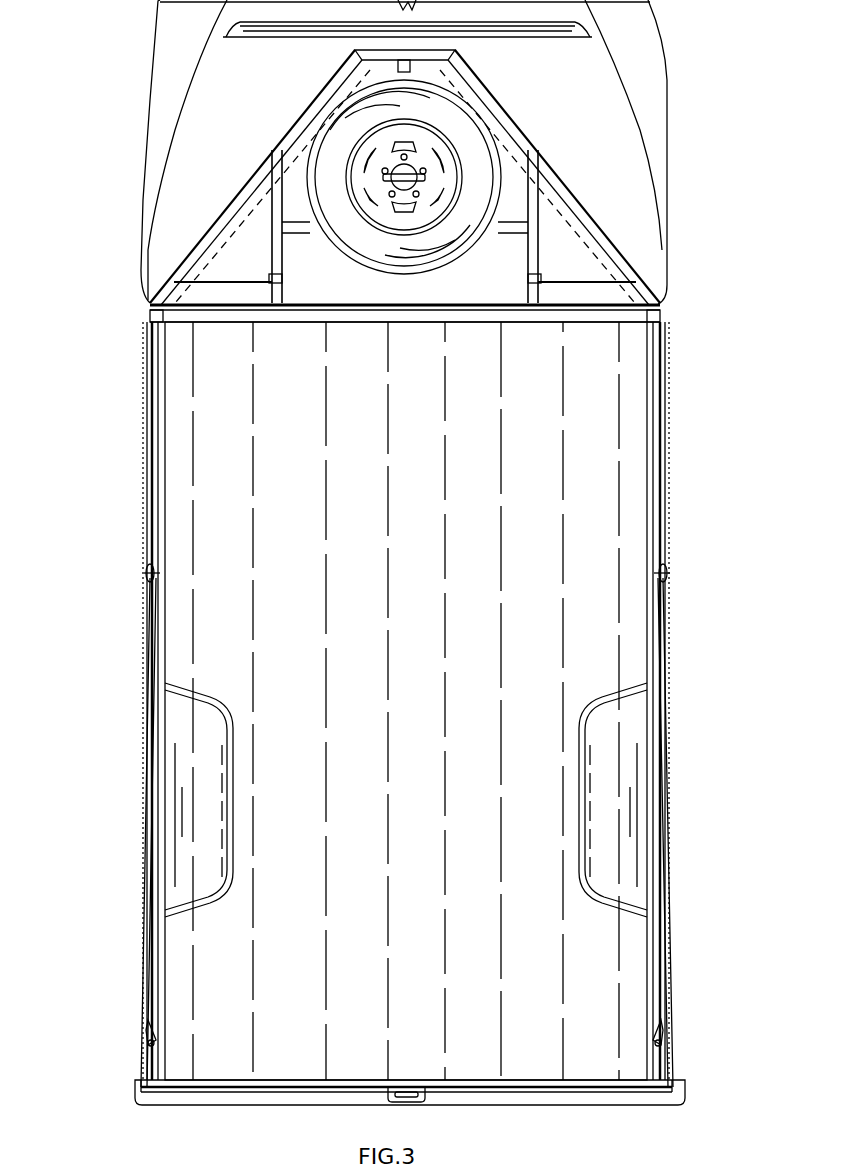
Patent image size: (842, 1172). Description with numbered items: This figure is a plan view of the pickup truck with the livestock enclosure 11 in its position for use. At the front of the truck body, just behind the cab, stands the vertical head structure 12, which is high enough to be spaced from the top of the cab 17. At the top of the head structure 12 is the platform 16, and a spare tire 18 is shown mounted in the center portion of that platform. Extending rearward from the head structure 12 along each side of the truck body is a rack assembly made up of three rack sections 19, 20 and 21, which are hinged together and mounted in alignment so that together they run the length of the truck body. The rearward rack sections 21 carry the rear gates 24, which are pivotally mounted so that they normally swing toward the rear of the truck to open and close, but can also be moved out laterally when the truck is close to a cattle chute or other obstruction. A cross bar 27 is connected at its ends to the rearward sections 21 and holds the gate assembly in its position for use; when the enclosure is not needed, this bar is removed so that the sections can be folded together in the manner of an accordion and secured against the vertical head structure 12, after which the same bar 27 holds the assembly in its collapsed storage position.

The livestock enclosure 11 is at (150, 492).
The vertical head structure 12 is at (265, 315).
The platform 16 is at (552, 292).
The top of the cab 17 is at (620, 198).
The spare tire 18 is at (367, 243).
The rack section 19 is at (150, 400).
The rack section 20 is at (165, 712).
The rack section 21 is at (153, 985).
The gate 24 is at (247, 1097).
The cross bar 27 is at (485, 1080).